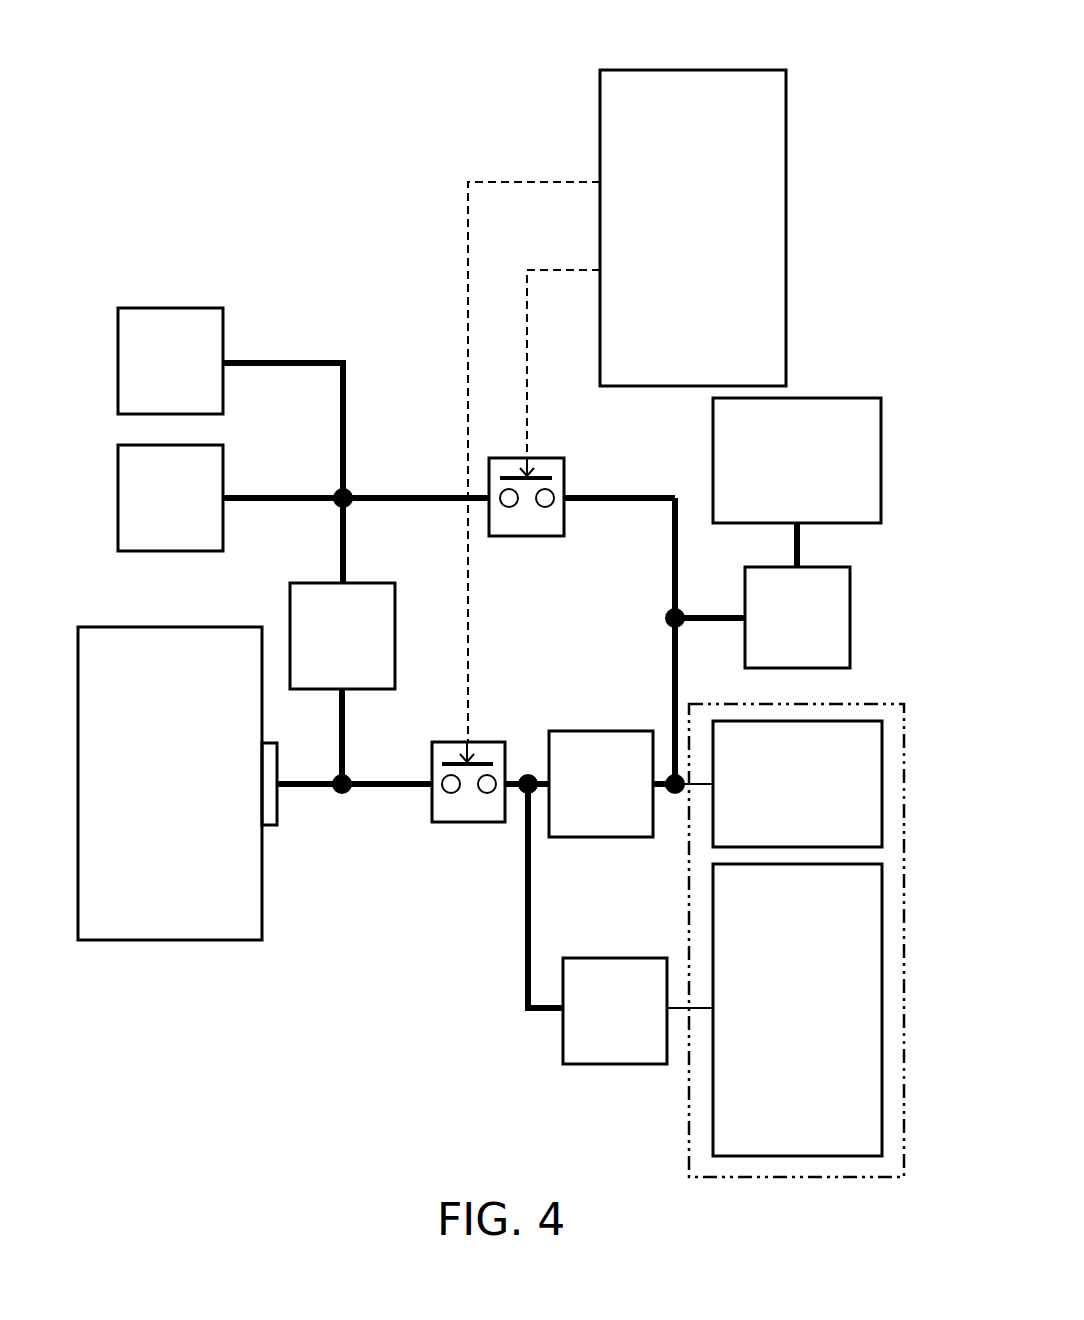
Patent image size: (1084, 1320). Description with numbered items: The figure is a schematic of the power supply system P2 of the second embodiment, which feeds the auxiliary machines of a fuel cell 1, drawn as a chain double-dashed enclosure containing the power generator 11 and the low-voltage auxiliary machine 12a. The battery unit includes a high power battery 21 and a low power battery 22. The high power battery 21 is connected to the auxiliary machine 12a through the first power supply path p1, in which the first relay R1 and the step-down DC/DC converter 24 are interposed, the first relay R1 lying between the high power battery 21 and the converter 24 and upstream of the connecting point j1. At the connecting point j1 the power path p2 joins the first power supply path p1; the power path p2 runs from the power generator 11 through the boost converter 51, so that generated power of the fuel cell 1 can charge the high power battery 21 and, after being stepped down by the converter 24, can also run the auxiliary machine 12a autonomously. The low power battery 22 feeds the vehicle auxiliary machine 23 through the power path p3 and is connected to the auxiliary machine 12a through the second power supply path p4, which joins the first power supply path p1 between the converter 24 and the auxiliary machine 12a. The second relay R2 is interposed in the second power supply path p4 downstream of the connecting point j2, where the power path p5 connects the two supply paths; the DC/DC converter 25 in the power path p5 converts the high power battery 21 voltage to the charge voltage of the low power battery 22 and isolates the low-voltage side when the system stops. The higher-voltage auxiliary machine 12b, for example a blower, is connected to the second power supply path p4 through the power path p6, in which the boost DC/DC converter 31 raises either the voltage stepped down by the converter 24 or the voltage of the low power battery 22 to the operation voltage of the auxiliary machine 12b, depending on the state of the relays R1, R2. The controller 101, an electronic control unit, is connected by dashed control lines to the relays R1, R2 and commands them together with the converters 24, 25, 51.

The controller 101 is at (727, 69).
The vehicle auxiliary machine 23 is at (118, 346).
The low power battery 22 is at (118, 481).
The high power battery 21 is at (135, 942).
The DC/DC converter 25 is at (383, 583).
The DC/DC converter 24 is at (620, 731).
The DC/DC converter 31 is at (851, 598).
The auxiliary machine 12b is at (883, 432).
The auxiliary machine 12a is at (883, 762).
The power generator 11 is at (883, 955).
The fuel cell 1 is at (862, 703).
The converter 51 is at (617, 958).
The first relay R1 is at (460, 823).
The second relay R2 is at (541, 537).
The connecting point j1 is at (528, 772).
The connecting point j2 is at (348, 490).
The first power supply path p1 is at (388, 790).
The power path p2 is at (523, 955).
The power path p3 is at (346, 409).
The second power supply path p4 is at (672, 546).
The power path p5 is at (340, 552).
The power path p6 is at (705, 612).
The power supply system P2 is at (856, 348).